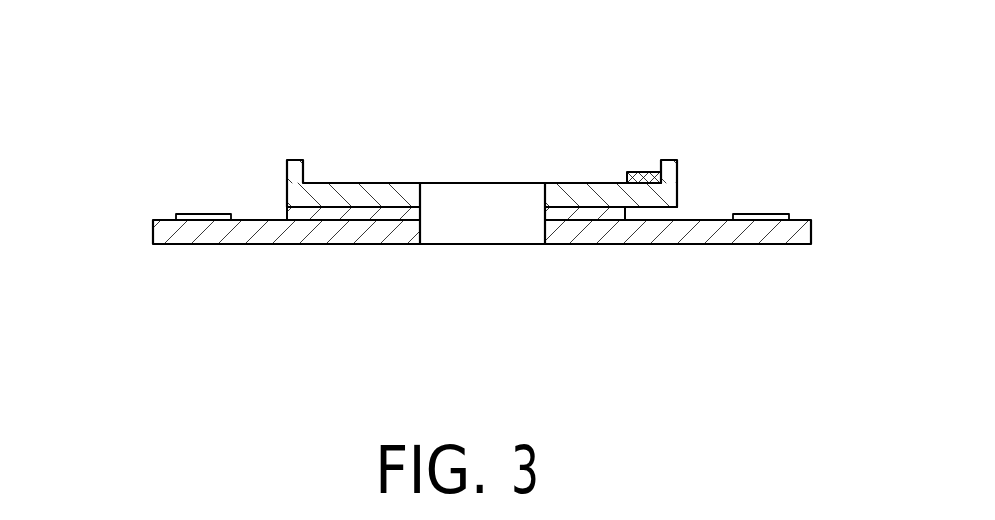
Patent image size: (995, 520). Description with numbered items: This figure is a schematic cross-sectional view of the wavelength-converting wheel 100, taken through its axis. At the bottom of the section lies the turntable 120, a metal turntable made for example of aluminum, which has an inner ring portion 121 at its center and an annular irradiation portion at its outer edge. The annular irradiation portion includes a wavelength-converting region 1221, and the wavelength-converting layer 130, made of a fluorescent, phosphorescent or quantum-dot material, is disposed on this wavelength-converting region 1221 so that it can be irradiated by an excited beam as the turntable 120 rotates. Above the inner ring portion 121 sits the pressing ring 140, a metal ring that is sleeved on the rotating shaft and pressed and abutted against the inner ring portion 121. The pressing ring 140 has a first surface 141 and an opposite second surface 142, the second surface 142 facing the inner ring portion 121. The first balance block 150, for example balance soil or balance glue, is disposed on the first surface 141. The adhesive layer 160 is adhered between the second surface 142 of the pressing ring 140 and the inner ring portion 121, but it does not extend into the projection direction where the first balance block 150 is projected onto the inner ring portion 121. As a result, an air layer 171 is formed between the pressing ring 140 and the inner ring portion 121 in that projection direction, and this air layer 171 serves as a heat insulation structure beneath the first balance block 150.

The wavelength-converting wheel 100 is at (115, 43).
The turntable 120 is at (163, 235).
The inner ring portion 121 is at (583, 219).
The wavelength-converting region 1221 is at (191, 221).
The wavelength-converting layer 130 is at (205, 213).
The pressing ring 140 is at (298, 195).
The first surface 141 is at (370, 184).
The second surface 142 is at (361, 207).
The first balance block 150 is at (647, 177).
The adhesive layer 160 is at (398, 212).
The air layer 171 is at (657, 212).